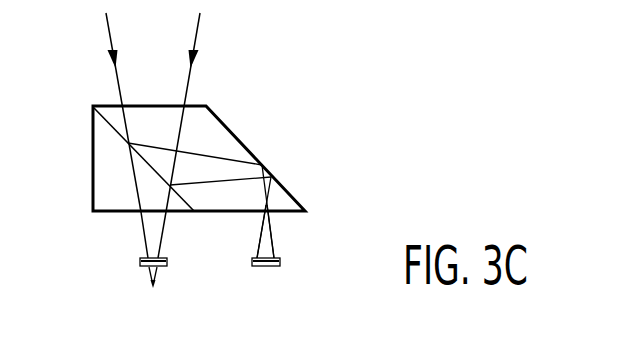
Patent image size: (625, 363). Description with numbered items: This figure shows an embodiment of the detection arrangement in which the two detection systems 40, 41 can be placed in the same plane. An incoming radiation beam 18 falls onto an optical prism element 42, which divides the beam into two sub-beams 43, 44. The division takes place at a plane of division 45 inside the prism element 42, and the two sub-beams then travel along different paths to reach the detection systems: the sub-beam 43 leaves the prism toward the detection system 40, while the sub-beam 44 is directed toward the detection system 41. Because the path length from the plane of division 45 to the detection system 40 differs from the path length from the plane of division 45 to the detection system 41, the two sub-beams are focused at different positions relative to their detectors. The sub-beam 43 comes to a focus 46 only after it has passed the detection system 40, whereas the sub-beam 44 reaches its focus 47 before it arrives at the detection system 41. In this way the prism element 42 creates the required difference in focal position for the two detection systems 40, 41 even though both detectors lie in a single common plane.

The incoming radiation beam 18 is at (109, 32).
The optical prism element 42 is at (233, 129).
The plane of division 45 is at (108, 123).
The focus of sub-beam 44 47 is at (273, 203).
The sub-beam 43 is at (142, 218).
The sub-beam 44 is at (270, 227).
The detection system 40 is at (140, 263).
The detection system 41 is at (280, 263).
The focus of sub-beam 43 46 is at (152, 285).